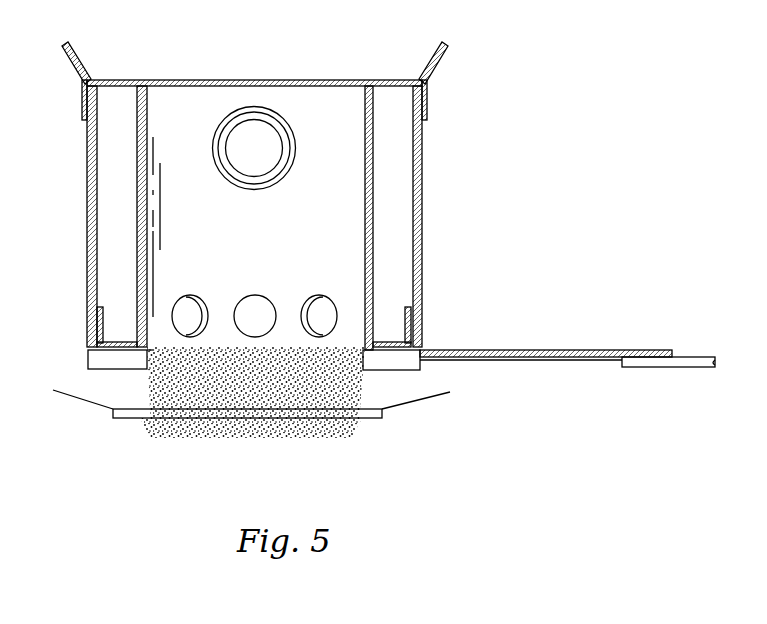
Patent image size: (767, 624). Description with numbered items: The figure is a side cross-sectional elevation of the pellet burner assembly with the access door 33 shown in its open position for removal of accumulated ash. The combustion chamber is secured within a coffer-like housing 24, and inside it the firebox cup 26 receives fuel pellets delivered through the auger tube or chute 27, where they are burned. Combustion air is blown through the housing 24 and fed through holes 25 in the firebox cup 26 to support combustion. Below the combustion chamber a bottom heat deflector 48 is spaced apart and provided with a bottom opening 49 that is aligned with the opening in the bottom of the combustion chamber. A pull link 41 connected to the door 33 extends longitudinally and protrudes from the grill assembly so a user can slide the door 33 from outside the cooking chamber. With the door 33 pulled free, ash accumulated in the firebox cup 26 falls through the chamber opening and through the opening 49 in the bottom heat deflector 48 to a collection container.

The housing 24 is at (420, 151).
The firebox cup 26 is at (373, 199).
The auger tube or chute 27 is at (251, 127).
The holes 25 is at (326, 298).
The access door 33 is at (472, 360).
The pull link 41 is at (414, 377).
The bottom heat deflector 48 is at (412, 403).
The bottom opening 49 is at (120, 420).